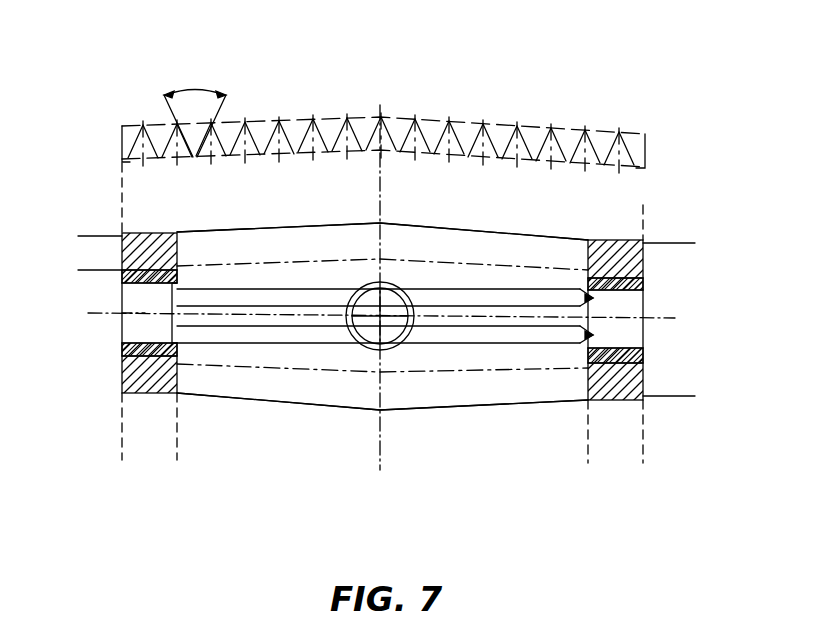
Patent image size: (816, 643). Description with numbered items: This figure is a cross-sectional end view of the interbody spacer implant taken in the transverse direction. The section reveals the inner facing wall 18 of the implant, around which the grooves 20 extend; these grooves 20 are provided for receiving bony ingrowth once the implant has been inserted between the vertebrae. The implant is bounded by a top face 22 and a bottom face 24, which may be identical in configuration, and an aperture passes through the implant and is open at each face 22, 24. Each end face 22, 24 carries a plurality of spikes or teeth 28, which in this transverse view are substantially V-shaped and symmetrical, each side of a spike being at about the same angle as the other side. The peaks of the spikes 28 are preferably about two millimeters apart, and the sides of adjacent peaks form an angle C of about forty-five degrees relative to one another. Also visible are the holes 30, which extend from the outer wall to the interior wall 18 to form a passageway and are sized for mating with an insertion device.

The inner facing wall 18 is at (540, 258).
The grooves 20 is at (278, 297).
The top face 22 is at (425, 222).
The bottom face 24 is at (468, 408).
The spikes or teeth 28 is at (497, 128).
The holes 30 is at (137, 328).
The angle C is at (195, 106).